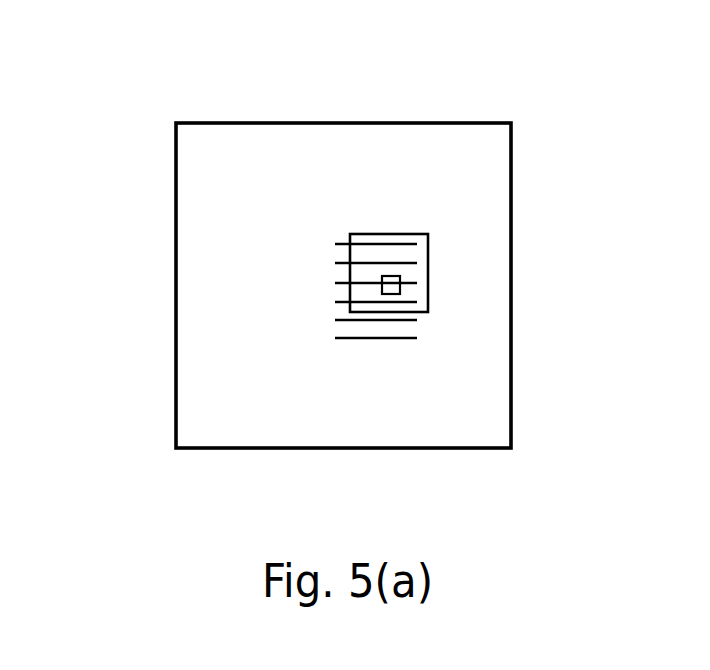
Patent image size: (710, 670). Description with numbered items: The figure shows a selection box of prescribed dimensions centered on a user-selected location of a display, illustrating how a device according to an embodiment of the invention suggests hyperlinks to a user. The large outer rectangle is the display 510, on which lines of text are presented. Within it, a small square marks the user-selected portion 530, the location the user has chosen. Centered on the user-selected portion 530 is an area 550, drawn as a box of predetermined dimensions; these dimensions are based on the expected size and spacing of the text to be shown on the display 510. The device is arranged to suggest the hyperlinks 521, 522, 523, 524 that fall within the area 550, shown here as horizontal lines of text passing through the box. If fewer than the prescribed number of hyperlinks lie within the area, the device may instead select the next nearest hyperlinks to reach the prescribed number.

The display 510 is at (511, 208).
The area 550 is at (388, 233).
The hyperlink 521 is at (337, 245).
The hyperlink 522 is at (337, 263).
The hyperlink 523 is at (337, 283).
The hyperlink 524 is at (337, 302).
The user-selected portion 530 is at (400, 288).